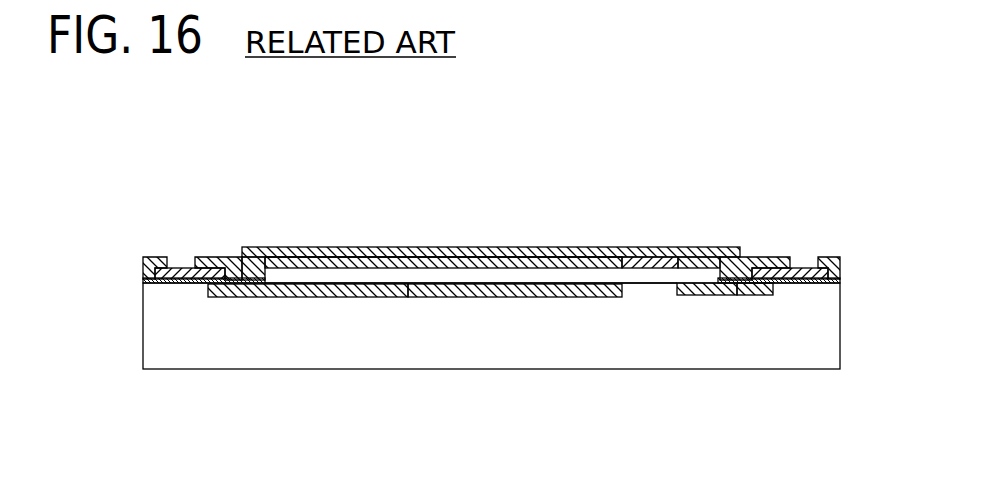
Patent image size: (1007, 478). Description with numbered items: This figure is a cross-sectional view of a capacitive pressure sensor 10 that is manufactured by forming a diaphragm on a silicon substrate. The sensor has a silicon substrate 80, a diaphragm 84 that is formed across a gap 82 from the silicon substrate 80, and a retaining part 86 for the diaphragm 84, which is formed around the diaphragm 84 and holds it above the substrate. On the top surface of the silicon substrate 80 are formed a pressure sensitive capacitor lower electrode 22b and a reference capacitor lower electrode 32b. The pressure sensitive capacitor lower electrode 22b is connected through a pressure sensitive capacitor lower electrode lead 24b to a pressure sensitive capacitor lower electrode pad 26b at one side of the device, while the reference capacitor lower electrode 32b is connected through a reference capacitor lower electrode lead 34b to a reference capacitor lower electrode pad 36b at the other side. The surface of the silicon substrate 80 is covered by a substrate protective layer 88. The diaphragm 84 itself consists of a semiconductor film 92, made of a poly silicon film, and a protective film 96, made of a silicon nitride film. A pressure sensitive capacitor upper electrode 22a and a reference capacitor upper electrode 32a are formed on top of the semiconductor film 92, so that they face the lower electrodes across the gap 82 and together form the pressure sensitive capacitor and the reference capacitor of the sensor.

The capacitive pressure sensor 10 is at (129, 266).
The silicon substrate 80 is at (828, 312).
The substrate protective layer 88 is at (840, 282).
The pressure sensitive capacitor lower electrode lead 24b is at (310, 297).
The pressure sensitive capacitor lower electrode 22b is at (497, 297).
The reference capacitor lower electrode 32b is at (710, 297).
The reference capacitor lower electrode lead 34b is at (762, 297).
The pressure sensitive capacitor lower electrode pad 26b is at (178, 268).
The retaining part 86 is at (238, 238).
The protective film 96 is at (257, 260).
The diaphragm 84 is at (423, 228).
The pressure sensitive capacitor upper electrode 22a is at (553, 262).
The semiconductor film 92 is at (330, 250).
The gap 82 is at (497, 278).
The reference capacitor upper electrode 32a is at (285, 262).
The reference capacitor lower electrode pad 36b is at (804, 266).